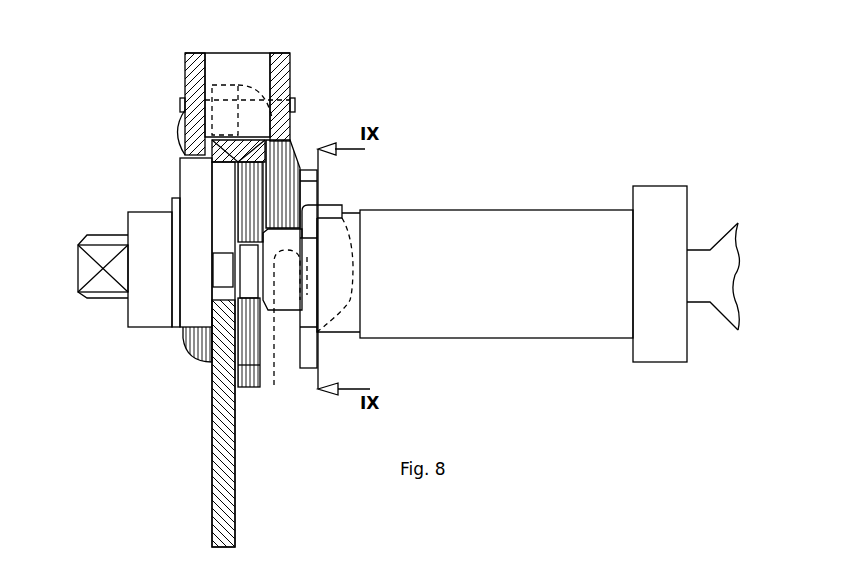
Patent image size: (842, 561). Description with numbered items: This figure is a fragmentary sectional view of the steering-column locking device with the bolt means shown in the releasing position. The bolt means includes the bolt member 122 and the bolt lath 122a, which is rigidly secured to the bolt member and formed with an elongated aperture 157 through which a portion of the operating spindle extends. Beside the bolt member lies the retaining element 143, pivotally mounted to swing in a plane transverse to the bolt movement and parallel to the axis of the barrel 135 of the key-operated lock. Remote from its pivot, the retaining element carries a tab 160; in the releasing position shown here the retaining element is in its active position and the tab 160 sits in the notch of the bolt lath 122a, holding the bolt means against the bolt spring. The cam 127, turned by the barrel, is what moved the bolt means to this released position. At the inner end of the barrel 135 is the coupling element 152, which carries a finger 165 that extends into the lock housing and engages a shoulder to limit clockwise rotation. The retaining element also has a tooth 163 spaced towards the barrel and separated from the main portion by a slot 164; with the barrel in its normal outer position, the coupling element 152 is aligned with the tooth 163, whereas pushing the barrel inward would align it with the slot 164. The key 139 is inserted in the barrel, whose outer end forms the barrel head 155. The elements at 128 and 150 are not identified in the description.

The bolt member 122 is at (288, 73).
The bolt lath 122a is at (225, 472).
The cam 127 is at (198, 310).
The bolt 128 is at (103, 296).
The barrel 135 is at (530, 225).
The key 139 is at (712, 262).
The retaining element 143 is at (296, 148).
The flange 150 is at (212, 393).
The coupling element 152 is at (307, 368).
The barrel head 155 is at (663, 203).
The elongated aperture 157 is at (237, 163).
The tab 160 is at (250, 388).
The tooth 163 is at (350, 300).
The slot 164 is at (284, 320).
The finger 165 is at (332, 212).